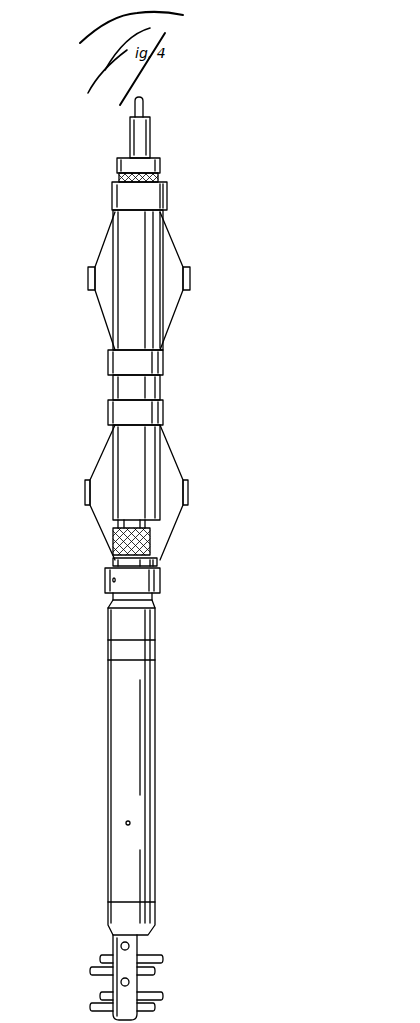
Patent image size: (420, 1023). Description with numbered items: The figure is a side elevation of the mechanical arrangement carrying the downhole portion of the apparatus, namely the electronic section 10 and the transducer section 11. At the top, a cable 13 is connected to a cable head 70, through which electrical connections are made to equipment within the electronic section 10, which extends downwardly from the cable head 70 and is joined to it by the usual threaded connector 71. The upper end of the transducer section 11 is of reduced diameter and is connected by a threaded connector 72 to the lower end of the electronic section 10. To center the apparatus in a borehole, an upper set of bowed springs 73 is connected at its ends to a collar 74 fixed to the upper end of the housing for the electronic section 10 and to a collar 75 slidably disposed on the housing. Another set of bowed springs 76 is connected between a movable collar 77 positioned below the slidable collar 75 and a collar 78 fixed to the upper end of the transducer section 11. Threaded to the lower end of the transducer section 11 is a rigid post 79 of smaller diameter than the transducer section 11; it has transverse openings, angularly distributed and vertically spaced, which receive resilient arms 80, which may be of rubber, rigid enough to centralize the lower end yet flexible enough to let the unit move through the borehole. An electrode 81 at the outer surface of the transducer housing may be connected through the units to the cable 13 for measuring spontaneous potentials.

The electronic section 10 is at (237, 182).
The transducer section 11 is at (236, 558).
The cable 13 is at (144, 104).
The cable head 70 is at (150, 137).
The threaded connector 71 is at (160, 176).
The threaded connector 72 is at (150, 540).
The bowed springs 73 is at (95, 300).
The collar 74 is at (167, 207).
The collar 75 is at (108, 362).
The bowed springs 76 is at (93, 462).
The movable collar 77 is at (108, 410).
The collar 78 is at (162, 588).
The rigid post 79 is at (102, 981).
The resilient arms 80 is at (157, 972).
The electrode 81 is at (131, 823).